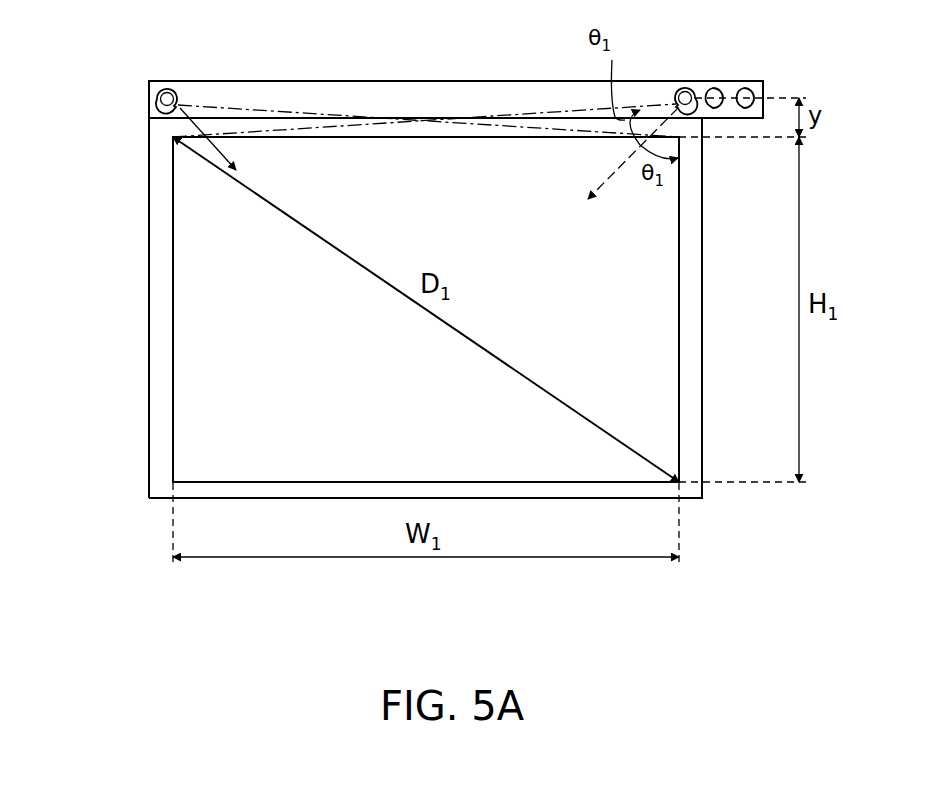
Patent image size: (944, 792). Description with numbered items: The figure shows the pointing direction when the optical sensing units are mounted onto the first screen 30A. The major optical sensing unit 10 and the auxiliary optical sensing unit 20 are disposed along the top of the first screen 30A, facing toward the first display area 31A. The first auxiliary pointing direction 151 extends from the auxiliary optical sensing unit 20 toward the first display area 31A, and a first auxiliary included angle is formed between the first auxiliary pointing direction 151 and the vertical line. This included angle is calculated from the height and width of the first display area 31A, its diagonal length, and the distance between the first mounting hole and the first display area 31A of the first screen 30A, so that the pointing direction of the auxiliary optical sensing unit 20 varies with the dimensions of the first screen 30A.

The major optical sensing unit 10 is at (160, 90).
The auxiliary optical sensing unit 20 is at (686, 88).
The first screen 30A is at (158, 314).
The first display area 31A is at (198, 390).
The first auxiliary pointing direction 151 is at (595, 176).